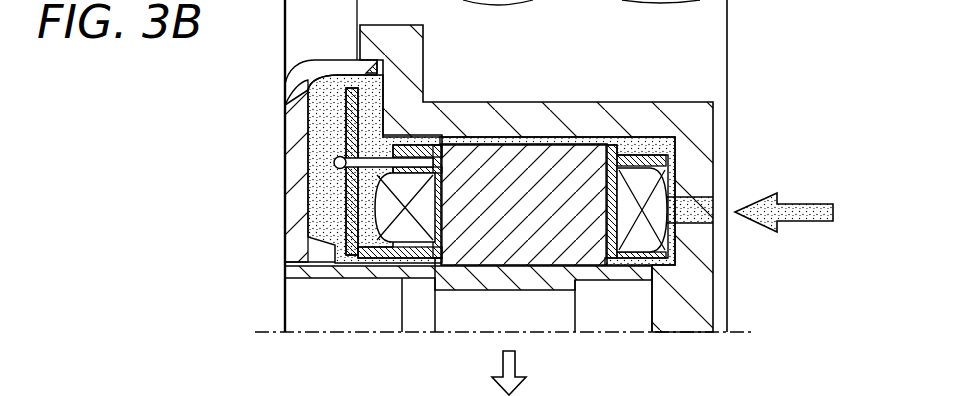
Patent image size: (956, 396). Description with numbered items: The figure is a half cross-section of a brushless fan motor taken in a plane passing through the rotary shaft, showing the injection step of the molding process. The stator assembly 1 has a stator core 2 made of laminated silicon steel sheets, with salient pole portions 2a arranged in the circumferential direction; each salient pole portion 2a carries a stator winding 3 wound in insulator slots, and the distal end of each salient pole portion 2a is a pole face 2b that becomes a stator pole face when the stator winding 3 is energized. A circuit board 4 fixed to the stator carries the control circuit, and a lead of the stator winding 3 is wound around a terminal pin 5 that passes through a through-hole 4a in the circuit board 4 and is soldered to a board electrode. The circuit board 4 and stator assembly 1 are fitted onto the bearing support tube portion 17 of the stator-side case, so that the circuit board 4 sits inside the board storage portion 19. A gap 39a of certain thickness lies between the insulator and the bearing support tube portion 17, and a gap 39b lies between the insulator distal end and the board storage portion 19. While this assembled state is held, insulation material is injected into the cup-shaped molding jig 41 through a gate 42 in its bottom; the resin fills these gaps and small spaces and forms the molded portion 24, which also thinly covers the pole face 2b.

The stator assembly 1 is at (335, 252).
The stator core 2 is at (490, 247).
The salient pole portion 2a is at (668, 148).
The pole face 2b is at (583, 143).
The stator winding 3 is at (390, 212).
The circuit board 4 is at (345, 128).
The through-hole 4a is at (330, 160).
The terminal pin 5 is at (347, 173).
The bearing support tube portion 17 is at (330, 280).
The board storage portion 19 is at (326, 218).
The molded portion 24 is at (370, 108).
The gap 39a is at (402, 280).
The gap 39b is at (335, 264).
The molding jig 41 is at (673, 110).
The gate 42 is at (727, 203).